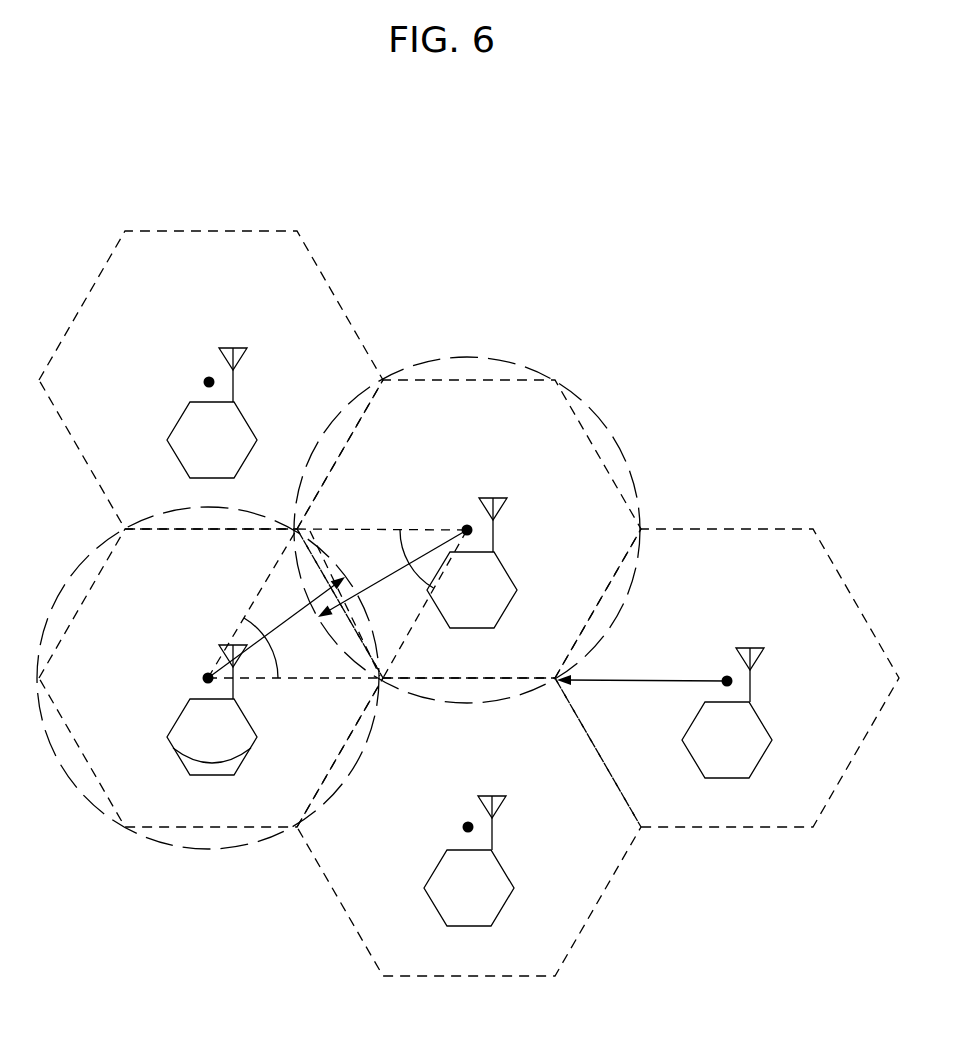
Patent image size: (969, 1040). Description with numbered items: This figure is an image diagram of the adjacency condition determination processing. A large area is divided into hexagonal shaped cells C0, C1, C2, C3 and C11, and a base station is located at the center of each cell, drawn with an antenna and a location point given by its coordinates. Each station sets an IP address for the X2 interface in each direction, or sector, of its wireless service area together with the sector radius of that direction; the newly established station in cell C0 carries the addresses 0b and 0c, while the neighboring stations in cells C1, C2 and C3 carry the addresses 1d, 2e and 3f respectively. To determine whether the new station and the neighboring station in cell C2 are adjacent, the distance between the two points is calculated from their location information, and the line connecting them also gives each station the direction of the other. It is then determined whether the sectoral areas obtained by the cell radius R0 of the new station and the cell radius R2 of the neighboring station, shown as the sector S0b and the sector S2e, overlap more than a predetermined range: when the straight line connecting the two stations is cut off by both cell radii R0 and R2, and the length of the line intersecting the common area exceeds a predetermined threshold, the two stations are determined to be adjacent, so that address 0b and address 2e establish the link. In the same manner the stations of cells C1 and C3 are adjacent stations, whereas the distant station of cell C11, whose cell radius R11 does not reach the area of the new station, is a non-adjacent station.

The X2 interface IP address of eNB0 0b is at (172, 722).
The X2 interface IP address of eNB0 0c is at (177, 763).
The X2 interface IP address of eNB1 1d is at (170, 425).
The X2 interface IP address of eNB2 2e is at (507, 607).
The X2 interface IP address of eNB3 3f is at (430, 872).
The cell C0 is at (180, 566).
The cell C1 is at (235, 272).
The cell C2 is at (495, 422).
The cell C3 is at (495, 746).
The cell C11 is at (760, 571).
The cell radius of eNB0 R0 is at (288, 619).
The cell radius of eNB2 R2 is at (390, 576).
The cell radius of eNB11 R11 is at (615, 678).
The sector of eNB0 S0b is at (342, 667).
The sector of eNB2 S2e is at (417, 612).